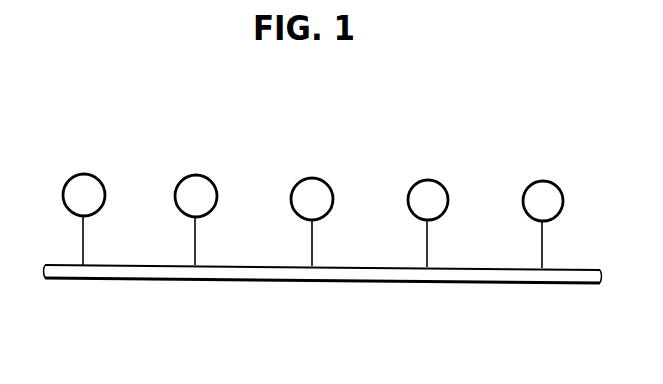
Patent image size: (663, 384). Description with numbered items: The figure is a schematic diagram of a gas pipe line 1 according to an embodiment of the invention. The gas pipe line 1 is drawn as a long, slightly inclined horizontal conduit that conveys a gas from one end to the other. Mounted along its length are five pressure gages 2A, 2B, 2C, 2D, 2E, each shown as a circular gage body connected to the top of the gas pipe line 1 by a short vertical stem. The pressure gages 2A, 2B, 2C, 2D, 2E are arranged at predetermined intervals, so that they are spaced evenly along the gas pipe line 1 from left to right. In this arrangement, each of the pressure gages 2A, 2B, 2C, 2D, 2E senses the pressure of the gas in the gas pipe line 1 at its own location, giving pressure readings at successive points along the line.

The gas pipe line 1 is at (322, 283).
The pressure gage 2A is at (97, 174).
The pressure gage 2B is at (200, 175).
The pressure gage 2C is at (312, 178).
The pressure gage 2D is at (424, 180).
The pressure gage 2E is at (531, 183).